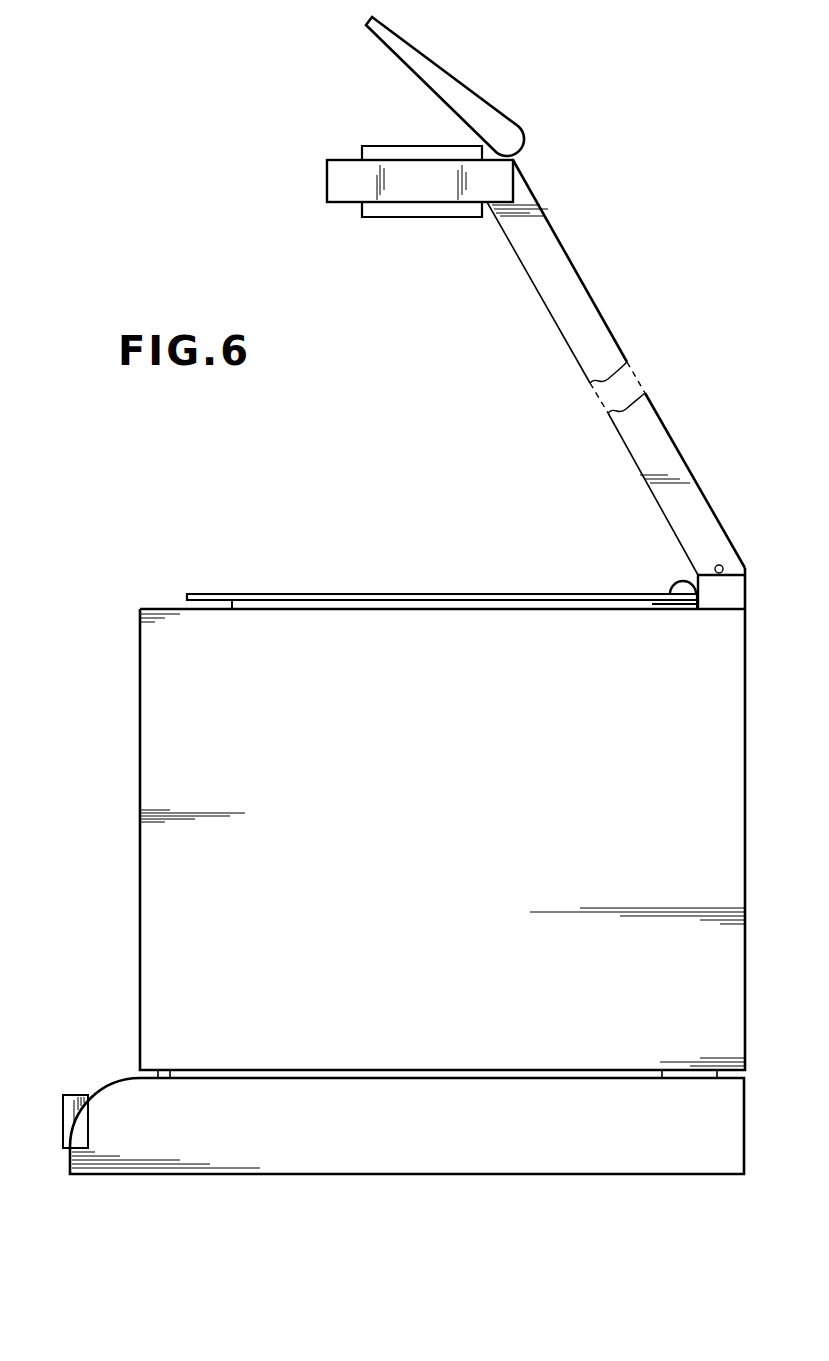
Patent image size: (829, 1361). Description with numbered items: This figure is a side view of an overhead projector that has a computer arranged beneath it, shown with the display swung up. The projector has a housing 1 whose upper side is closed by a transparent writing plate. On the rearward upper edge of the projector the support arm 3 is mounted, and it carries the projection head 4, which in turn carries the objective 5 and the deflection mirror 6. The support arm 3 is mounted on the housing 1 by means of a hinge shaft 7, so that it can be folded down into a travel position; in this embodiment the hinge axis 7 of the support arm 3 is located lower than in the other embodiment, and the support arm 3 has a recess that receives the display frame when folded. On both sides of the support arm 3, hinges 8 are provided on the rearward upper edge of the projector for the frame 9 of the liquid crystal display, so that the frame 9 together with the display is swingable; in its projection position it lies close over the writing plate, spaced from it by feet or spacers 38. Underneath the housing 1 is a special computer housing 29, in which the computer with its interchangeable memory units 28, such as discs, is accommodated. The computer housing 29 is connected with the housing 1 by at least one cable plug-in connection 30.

The housing 1 is at (480, 695).
The support arm 3 is at (592, 332).
The projection head 4 is at (360, 178).
The objective 5 is at (412, 152).
The deflection mirror 6 is at (462, 93).
The hinge shaft 7 is at (722, 566).
The hinges 8 is at (677, 585).
The frame 9 is at (352, 598).
The interchangeable memory units 28 is at (80, 1095).
The computer housing 29 is at (132, 1098).
The cable plug-in connection 30 is at (158, 1070).
The feet or spacers 38 is at (213, 605).